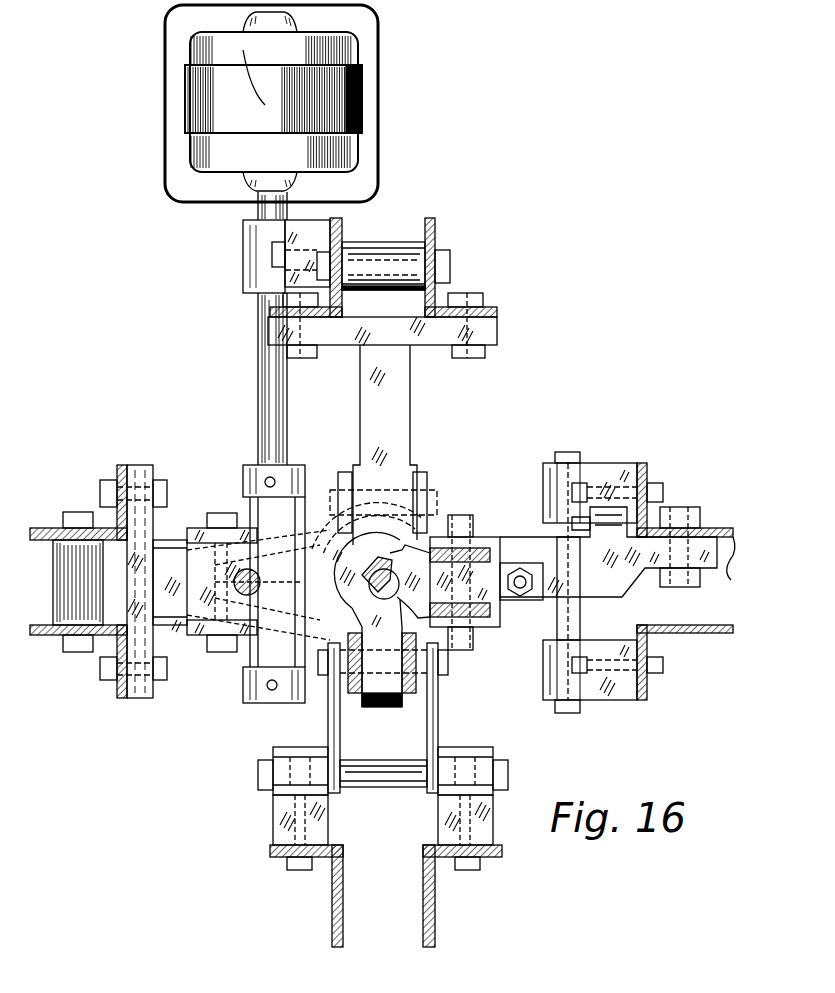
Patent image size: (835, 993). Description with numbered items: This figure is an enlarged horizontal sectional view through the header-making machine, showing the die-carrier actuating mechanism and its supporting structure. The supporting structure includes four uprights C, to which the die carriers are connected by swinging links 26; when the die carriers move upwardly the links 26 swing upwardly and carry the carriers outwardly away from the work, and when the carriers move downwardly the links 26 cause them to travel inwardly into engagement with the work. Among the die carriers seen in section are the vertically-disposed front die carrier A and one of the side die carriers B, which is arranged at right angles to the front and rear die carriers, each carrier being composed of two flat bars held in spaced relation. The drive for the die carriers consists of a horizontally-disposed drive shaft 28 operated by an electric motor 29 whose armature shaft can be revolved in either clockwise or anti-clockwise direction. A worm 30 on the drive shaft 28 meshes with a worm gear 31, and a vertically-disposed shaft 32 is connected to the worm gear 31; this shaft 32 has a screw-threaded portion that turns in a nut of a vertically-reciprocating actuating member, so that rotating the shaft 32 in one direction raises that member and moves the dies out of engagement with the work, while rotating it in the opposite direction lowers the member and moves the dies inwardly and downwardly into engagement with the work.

The swinging links 26 is at (527, 505).
The drive shaft 28 is at (267, 396).
The electric motor 29 is at (188, 135).
The worm 30 is at (277, 595).
The worm gear 31 is at (319, 535).
The vertically-disposed shaft 32 is at (353, 603).
The front die carrier A is at (497, 549).
The side die carrier B is at (359, 700).
The uprights C is at (43, 637).